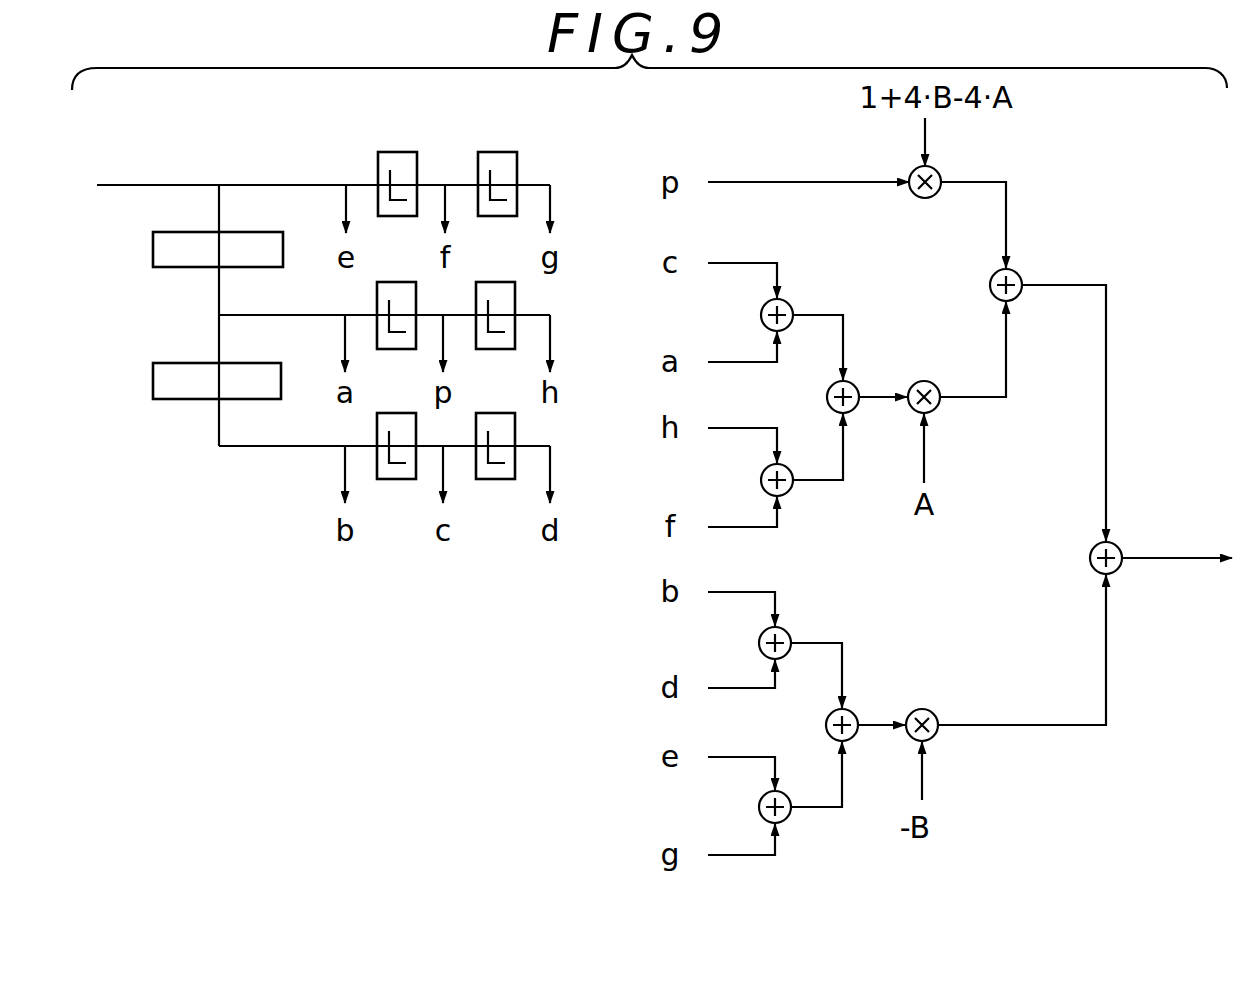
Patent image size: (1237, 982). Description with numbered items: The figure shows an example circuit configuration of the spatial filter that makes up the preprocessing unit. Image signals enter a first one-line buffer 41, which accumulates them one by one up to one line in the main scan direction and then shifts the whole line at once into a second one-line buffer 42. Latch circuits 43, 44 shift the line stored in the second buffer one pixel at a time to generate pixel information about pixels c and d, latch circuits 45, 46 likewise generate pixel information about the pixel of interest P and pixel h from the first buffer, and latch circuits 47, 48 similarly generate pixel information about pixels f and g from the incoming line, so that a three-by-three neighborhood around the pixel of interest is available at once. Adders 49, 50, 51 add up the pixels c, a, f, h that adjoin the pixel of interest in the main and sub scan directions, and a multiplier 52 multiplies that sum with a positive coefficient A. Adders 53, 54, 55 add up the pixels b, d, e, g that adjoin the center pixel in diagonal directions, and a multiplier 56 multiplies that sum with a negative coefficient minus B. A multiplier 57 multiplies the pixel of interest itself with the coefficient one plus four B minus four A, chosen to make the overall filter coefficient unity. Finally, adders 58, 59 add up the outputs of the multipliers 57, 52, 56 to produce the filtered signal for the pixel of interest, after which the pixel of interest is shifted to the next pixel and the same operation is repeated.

The first 1-line buffer 41 is at (153, 247).
The second 1-line buffer 42 is at (153, 380).
The latch circuit 43 is at (405, 479).
The latch circuit 44 is at (502, 479).
The latch circuit 45 is at (408, 349).
The latch circuit 46 is at (508, 349).
The latch circuit 47 is at (378, 162).
The latch circuit 48 is at (478, 162).
The adder 49 is at (790, 302).
The adder 50 is at (792, 490).
The adder 51 is at (855, 386).
The multiplier 52 is at (936, 386).
The adder 53 is at (791, 631).
The adder 54 is at (790, 816).
The adder 55 is at (855, 714).
The multiplier 56 is at (936, 714).
The multiplier 57 is at (914, 196).
The adder 58 is at (1018, 272).
The adder 59 is at (1118, 570).